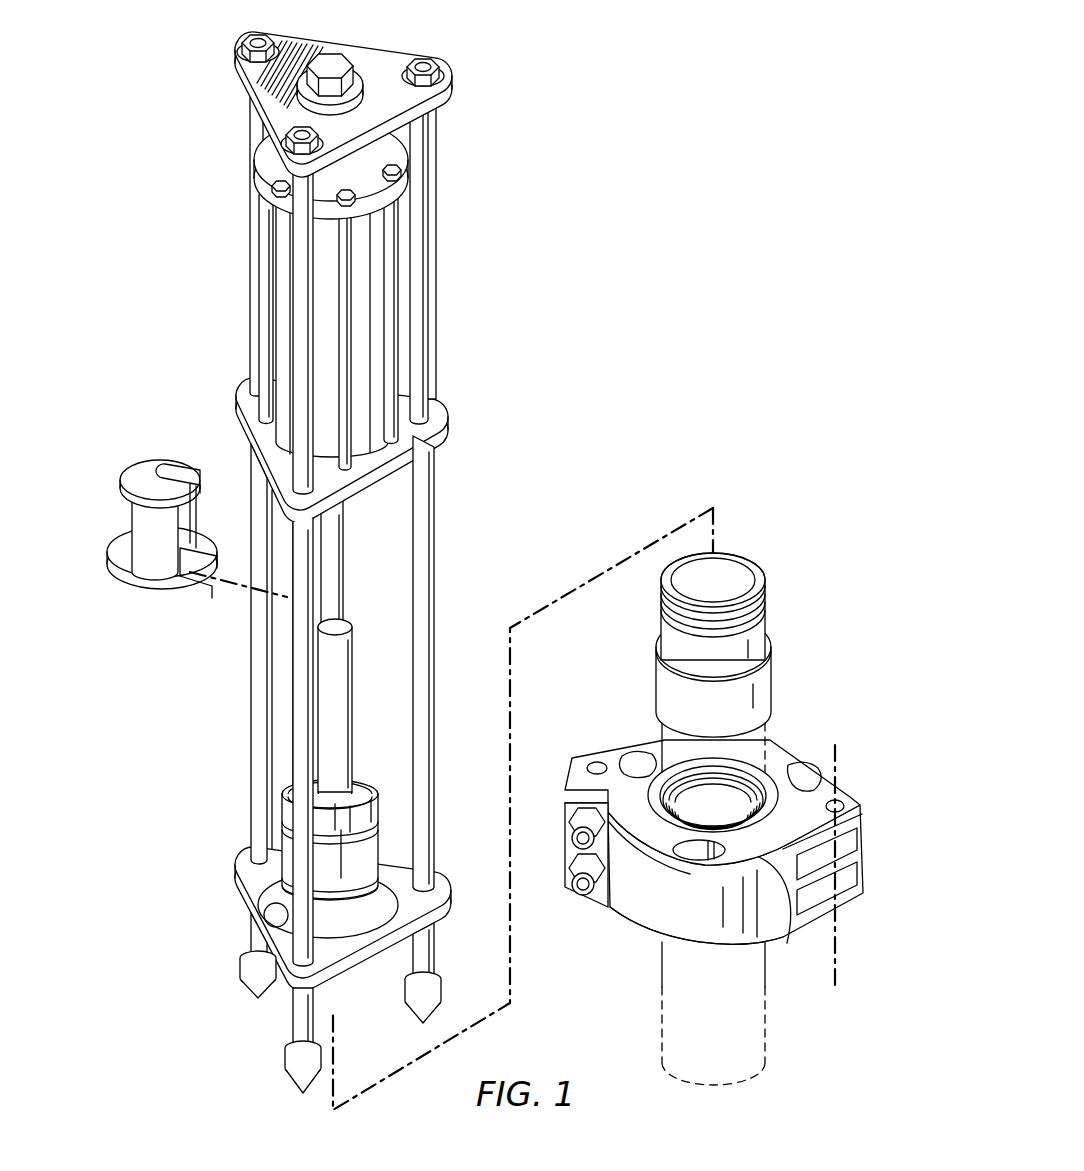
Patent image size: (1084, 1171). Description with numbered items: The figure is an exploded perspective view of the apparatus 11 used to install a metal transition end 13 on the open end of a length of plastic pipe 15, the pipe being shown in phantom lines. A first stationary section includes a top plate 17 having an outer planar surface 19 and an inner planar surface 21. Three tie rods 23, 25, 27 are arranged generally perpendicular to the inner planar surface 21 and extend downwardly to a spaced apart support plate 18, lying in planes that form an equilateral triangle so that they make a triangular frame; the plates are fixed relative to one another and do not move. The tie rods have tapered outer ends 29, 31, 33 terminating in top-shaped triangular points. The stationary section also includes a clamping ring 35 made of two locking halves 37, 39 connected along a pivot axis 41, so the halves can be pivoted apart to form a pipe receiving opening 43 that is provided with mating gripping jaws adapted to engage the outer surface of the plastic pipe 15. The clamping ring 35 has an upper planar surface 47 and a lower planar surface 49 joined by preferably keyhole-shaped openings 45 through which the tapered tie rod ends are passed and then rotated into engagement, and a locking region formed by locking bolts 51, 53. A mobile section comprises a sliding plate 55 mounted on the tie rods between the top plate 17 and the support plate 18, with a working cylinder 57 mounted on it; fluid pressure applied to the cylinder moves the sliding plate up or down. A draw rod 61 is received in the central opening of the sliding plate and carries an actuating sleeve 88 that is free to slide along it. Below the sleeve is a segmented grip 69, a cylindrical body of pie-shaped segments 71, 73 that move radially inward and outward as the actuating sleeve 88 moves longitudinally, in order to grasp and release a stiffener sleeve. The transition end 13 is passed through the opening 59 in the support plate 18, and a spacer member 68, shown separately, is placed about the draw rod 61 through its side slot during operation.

The apparatus 11 is at (460, 216).
The metal transition end 13 is at (770, 655).
The plastic pipe 15 is at (767, 1040).
The top plate 17 is at (248, 88).
The support plate 18 is at (262, 877).
The outer planar surface 19 is at (375, 65).
The inner planar surface 21 is at (433, 142).
The tie rod 23 is at (425, 345).
The tie rod 25 is at (290, 330).
The tie rod 27 is at (255, 282).
The tapered outer end 29 is at (441, 990).
The tapered outer end 31 is at (285, 1060).
The tapered outer end 33 is at (245, 968).
The clamping ring 35 is at (826, 718).
The locking half 37 is at (606, 757).
The locking half 39 is at (633, 917).
The pivot axis 41 is at (837, 972).
The pipe receiving opening 43 is at (758, 772).
The opening 45 is at (645, 760).
The upper planar surface 47 is at (780, 915).
The lower planar surface 49 is at (655, 940).
The locking bolt 51 is at (568, 828).
The locking bolt 53 is at (585, 893).
The sliding plate 55 is at (445, 425).
The working cylinder 57 is at (378, 265).
The opening 59 is at (290, 930).
The draw rod 61 is at (345, 556).
The spacer member 68 is at (150, 462).
The segmented grip 69 is at (392, 853).
The pie-shaped segment 71 is at (362, 785).
The pie-shaped segment 73 is at (378, 815).
The actuating sleeve 88 is at (360, 668).